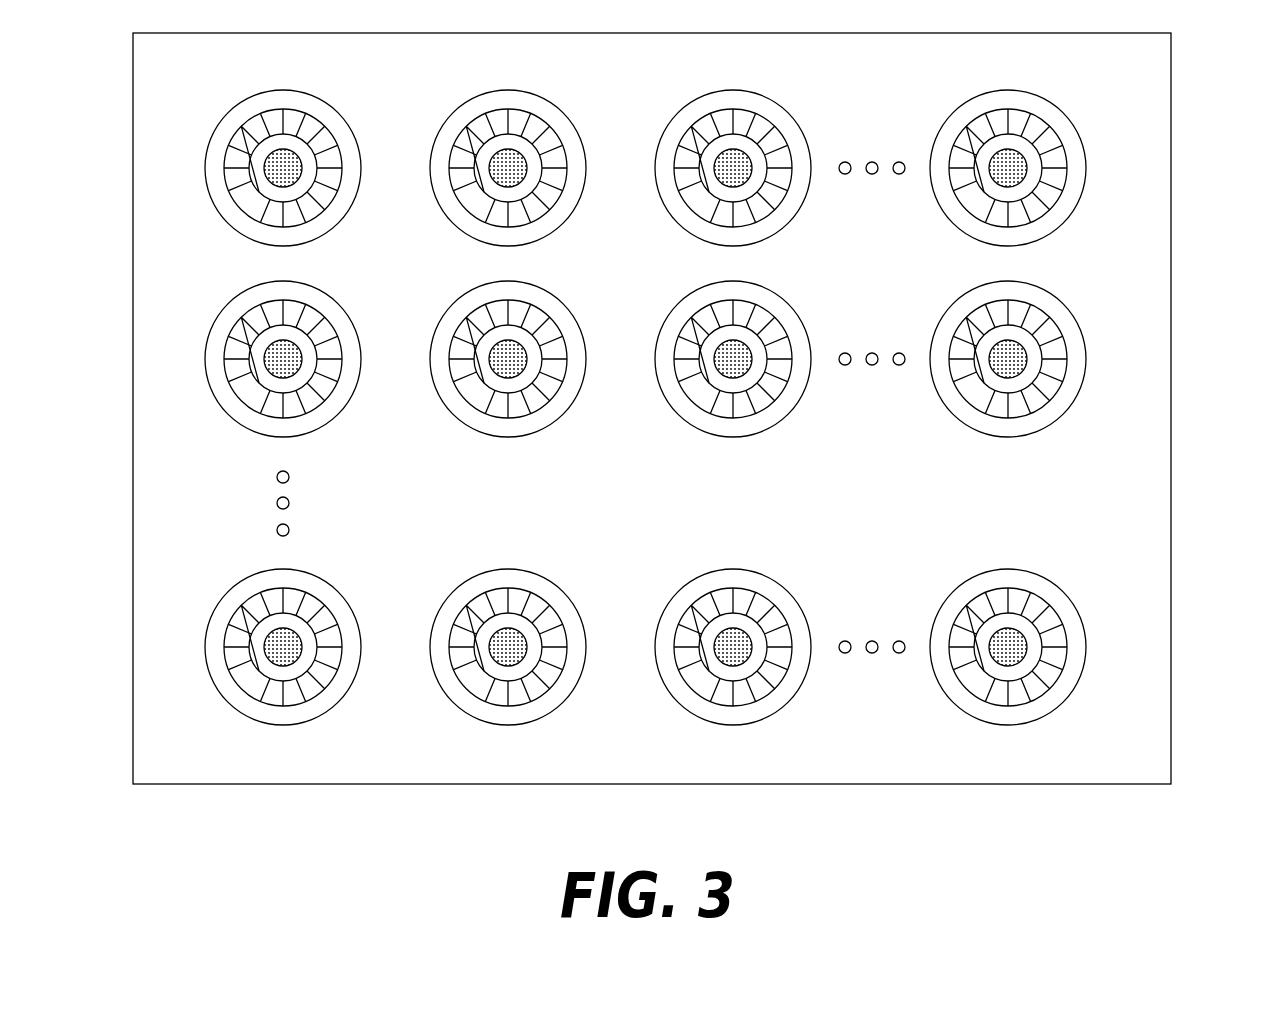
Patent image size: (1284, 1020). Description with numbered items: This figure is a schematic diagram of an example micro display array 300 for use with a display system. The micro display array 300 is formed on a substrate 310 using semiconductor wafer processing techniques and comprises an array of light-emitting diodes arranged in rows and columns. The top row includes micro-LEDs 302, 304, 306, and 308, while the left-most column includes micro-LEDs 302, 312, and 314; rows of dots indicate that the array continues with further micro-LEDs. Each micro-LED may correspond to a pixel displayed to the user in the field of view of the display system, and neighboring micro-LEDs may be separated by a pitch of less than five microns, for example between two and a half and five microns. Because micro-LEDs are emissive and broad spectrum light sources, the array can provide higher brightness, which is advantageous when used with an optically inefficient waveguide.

The micro display array 300 is at (703, 433).
The micro-LED 302 is at (306, 152).
The micro-LED 304 is at (531, 152).
The micro-LED 306 is at (757, 152).
The micro-LED 308 is at (1031, 152).
The substrate 310 is at (1172, 100).
The micro-LED 312 is at (306, 343).
The micro-LED 314 is at (306, 631).